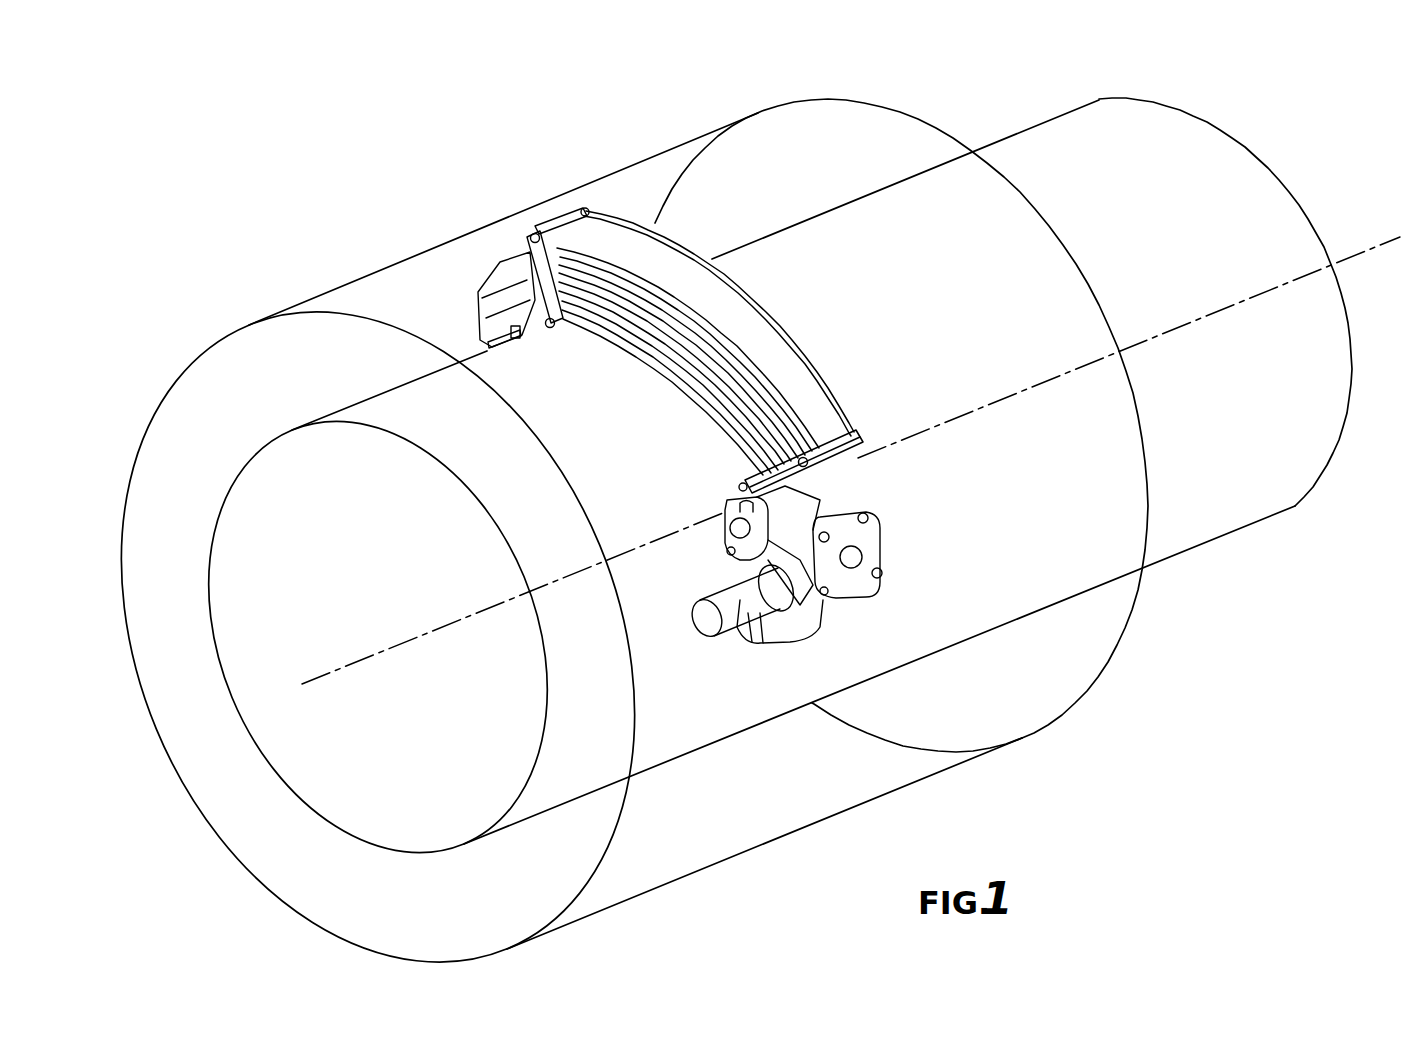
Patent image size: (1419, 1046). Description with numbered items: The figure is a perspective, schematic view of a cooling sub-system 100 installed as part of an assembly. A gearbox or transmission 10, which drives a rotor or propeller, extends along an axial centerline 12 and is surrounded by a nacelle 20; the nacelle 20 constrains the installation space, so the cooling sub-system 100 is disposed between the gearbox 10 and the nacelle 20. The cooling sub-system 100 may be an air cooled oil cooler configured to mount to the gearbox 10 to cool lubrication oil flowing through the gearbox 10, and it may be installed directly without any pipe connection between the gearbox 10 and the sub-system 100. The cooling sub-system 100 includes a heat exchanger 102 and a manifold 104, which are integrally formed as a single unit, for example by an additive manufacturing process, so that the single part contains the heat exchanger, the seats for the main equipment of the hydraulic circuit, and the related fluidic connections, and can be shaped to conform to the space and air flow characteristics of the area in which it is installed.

The gearbox or transmission 10 is at (1170, 113).
The axial centerline 12 is at (1215, 314).
The nacelle 20 is at (823, 117).
The cooling sub-system 100 is at (685, 403).
The heat exchanger 102 is at (747, 320).
The manifold 104 is at (823, 614).